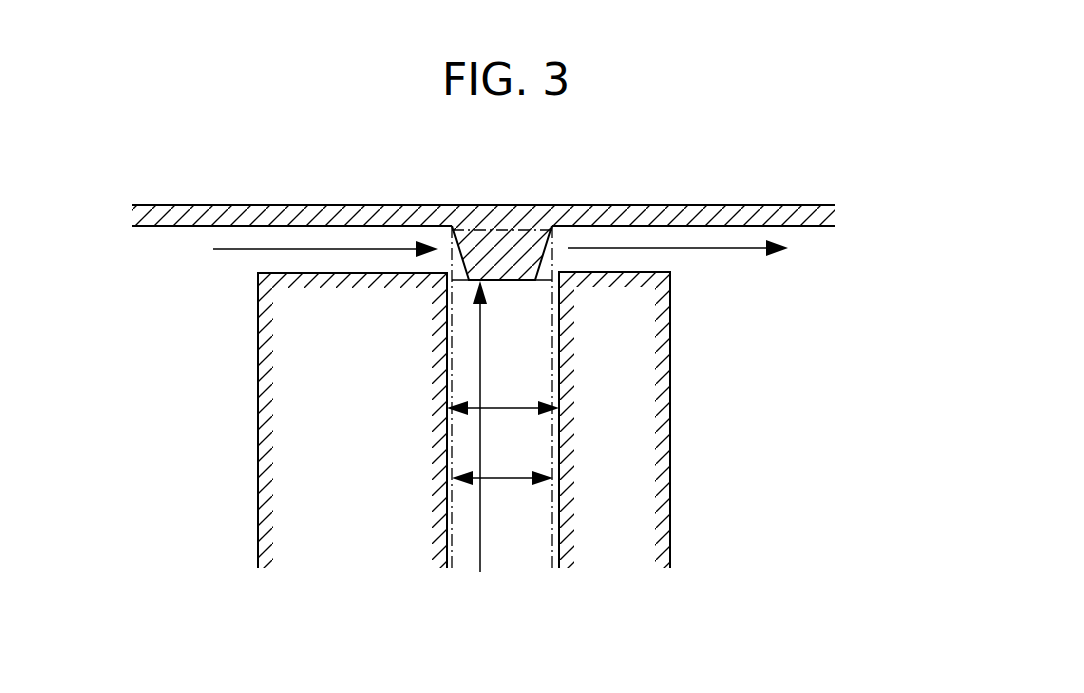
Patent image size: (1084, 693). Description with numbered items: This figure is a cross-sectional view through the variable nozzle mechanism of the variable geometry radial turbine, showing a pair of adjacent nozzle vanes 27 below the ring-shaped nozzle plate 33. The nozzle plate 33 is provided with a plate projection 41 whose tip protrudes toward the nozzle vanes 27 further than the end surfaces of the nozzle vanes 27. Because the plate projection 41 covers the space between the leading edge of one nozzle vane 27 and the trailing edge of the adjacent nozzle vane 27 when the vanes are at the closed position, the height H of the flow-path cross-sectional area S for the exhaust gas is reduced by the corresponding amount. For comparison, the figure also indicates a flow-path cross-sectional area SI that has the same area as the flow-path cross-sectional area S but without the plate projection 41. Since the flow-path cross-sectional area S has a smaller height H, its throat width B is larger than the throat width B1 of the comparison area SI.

The nozzle plate 33 is at (808, 226).
The plate projection 41 is at (497, 280).
The flow-path cross-sectional area SI is at (552, 244).
The nozzle vane 27 is at (258, 420).
The flow-path cross-sectional area S is at (548, 347).
The height H is at (481, 547).
The throat width B is at (503, 394).
The throat width B1 is at (502, 464).